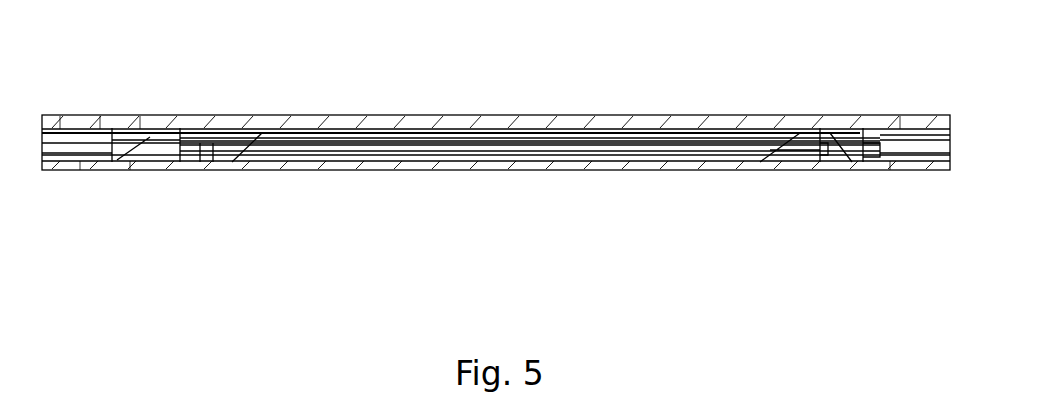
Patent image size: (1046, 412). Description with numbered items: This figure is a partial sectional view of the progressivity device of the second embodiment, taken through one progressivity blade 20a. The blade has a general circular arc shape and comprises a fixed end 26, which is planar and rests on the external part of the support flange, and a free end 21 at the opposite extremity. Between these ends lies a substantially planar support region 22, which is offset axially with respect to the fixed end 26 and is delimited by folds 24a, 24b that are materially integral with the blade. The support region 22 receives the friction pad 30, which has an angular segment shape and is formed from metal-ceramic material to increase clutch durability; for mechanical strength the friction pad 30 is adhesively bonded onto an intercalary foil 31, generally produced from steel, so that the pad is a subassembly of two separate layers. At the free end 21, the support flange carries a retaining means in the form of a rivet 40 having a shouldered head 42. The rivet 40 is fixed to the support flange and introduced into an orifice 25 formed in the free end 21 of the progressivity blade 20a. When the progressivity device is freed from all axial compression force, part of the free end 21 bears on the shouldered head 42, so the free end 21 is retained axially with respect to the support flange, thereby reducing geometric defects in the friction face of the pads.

The free end 21 is at (214, 132).
The friction pad 30 is at (318, 116).
The intercalary foil 31 is at (632, 170).
The support region 22 is at (412, 136).
The fixed end 26 is at (633, 139).
The shouldered head 42 is at (814, 132).
The progressivity blade 20a is at (261, 144).
The fold 24a is at (300, 143).
The fold 24b is at (470, 150).
The orifice 25 is at (800, 141).
The rivet 40 is at (852, 141).